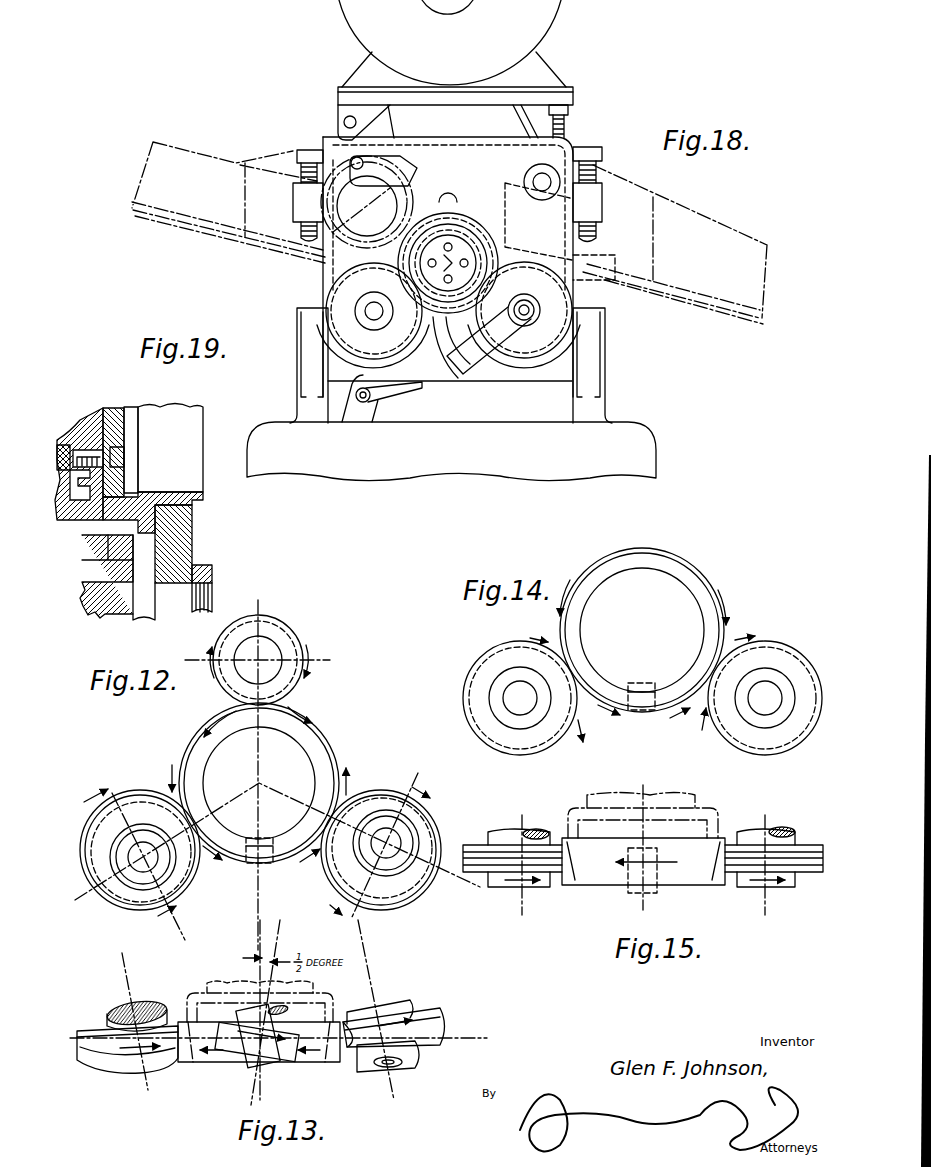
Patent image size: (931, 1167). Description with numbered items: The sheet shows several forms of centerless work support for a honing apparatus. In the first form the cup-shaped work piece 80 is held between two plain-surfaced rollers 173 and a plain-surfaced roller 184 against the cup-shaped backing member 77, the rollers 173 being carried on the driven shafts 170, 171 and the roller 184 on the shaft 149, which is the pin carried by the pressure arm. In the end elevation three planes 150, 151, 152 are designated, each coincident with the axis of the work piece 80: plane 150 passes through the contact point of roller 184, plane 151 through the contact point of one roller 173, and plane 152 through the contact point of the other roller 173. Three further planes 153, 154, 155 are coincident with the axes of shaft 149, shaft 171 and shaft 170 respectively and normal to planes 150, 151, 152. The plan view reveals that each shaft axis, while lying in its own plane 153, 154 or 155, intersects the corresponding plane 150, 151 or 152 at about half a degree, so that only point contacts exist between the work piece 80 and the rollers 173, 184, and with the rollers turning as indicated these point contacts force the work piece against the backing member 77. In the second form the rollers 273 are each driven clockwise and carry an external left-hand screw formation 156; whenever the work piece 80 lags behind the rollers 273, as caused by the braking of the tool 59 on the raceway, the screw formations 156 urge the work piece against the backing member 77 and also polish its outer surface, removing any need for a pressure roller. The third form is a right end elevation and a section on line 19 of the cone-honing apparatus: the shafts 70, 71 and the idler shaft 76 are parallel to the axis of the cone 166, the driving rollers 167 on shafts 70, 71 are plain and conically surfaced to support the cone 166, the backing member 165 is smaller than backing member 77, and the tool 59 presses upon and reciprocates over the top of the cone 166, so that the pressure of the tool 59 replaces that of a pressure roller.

In FIG. 18, the section line 19 is at (452, 258).
In FIG. 18, the tool 59 is at (450, 262).
In FIG. 12, the tool 59 is at (250, 866).
In FIG. 14, the tool 59 is at (640, 683).
In FIG. 15, the tool 59 is at (628, 888).
In FIG. 18, the shaft 70 is at (373, 312).
In FIG. 14, the shaft 70 is at (515, 695).
In FIG. 15, the shaft 70 is at (540, 836).
In FIG. 18, the shaft 71 is at (525, 311).
In FIG. 14, the shaft 71 is at (772, 690).
In FIG. 15, the shaft 71 is at (782, 830).
In FIG. 18, the idler shaft 76 is at (495, 245).
In FIG. 13, the cup-shaped backing member 77 is at (200, 993).
In FIG. 15, the cup-shaped backing member 77 is at (705, 808).
In FIG. 12, the work piece 80 is at (330, 745).
In FIG. 13, the work piece 80 is at (190, 1065).
In FIG. 14, the work piece 80 is at (688, 568).
In FIG. 15, the work piece 80 is at (580, 886).
In FIG. 12, the shaft 149 is at (264, 648).
In FIG. 13, the shaft 149 is at (270, 1068).
In FIG. 12, the plane 150 is at (262, 756).
In FIG. 13, the plane 150 is at (258, 942).
In FIG. 12, the plane 151 is at (290, 808).
In FIG. 12, the plane 152 is at (223, 805).
In FIG. 12, the plane 153 is at (318, 660).
In FIG. 12, the plane 154 is at (412, 795).
In FIG. 12, the plane 155 is at (94, 780).
In FIG. 14, the left-hand screw formation 156 is at (507, 650).
In FIG. 15, the left-hand screw formation 156 is at (463, 875).
In FIG. 18, the backing member 165 is at (462, 225).
In FIG. 19, the backing member 165 is at (108, 408).
In FIG. 18, the cone 166 is at (420, 198).
In FIG. 19, the cone 166 is at (203, 440).
In FIG. 18, the driving roller 167 is at (325, 300).
In FIG. 19, the driving roller 167 is at (192, 545).
In FIG. 12, the shaft 170 is at (140, 868).
In FIG. 13, the shaft 170 is at (140, 1002).
In FIG. 12, the shaft 171 is at (396, 843).
In FIG. 13, the shaft 171 is at (395, 1003).
In FIG. 12, the roller 173 is at (138, 788).
In FIG. 13, the roller 173 is at (92, 1022).
In FIG. 12, the roller 184 is at (272, 650).
In FIG. 13, the roller 184 is at (236, 1058).
In FIG. 14, the roller 273 is at (468, 686).
In FIG. 15, the roller 273 is at (483, 888).